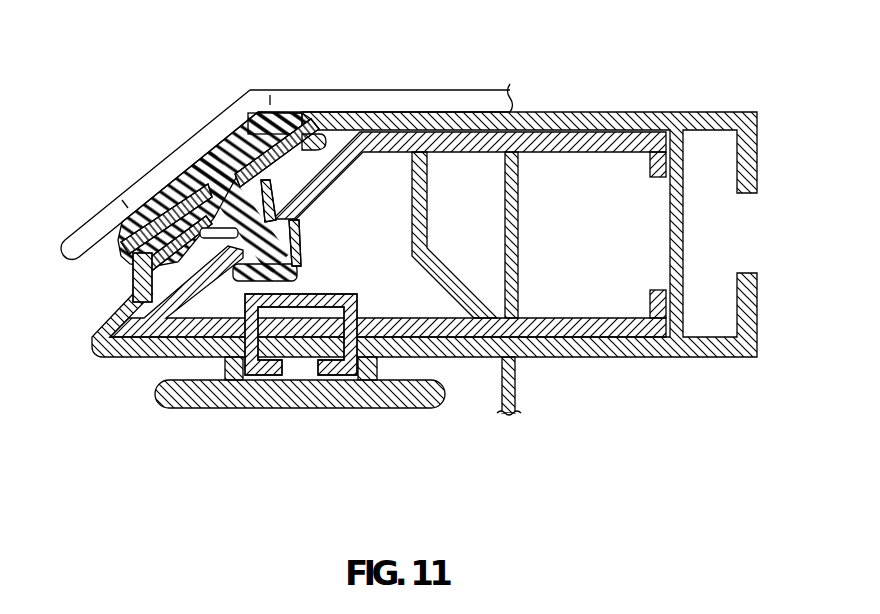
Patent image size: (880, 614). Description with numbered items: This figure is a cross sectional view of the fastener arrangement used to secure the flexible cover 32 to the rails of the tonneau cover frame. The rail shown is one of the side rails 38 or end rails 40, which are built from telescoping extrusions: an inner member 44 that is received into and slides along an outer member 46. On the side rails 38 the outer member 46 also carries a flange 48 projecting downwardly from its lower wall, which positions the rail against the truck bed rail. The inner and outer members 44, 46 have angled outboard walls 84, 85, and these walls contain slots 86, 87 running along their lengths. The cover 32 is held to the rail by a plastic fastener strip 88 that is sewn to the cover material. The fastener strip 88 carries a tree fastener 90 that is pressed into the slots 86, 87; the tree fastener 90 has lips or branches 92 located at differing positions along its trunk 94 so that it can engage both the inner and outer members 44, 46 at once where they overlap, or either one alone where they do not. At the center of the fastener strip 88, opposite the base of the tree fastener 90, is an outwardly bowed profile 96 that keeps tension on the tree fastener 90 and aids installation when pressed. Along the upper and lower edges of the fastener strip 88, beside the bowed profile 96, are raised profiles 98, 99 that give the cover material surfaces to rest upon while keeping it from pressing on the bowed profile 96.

The cover 32 is at (467, 100).
The side rails 38 is at (396, 276).
The end rails 40 is at (396, 276).
The inner member 44 is at (603, 140).
The outer member 46 is at (550, 122).
The flange 48 is at (515, 385).
The angled outboard wall 84 is at (347, 172).
The angled outboard wall 85 is at (300, 148).
The slot 86 is at (260, 112).
The slot 87 is at (217, 147).
The fastener strip 88 is at (177, 147).
The tree fastener 90 is at (208, 247).
The lips or branches 92 is at (170, 253).
The trunk 94 is at (292, 218).
The bowed profile 96 is at (173, 187).
The raised profile 98 is at (266, 180).
The raised profile 99 is at (100, 211).